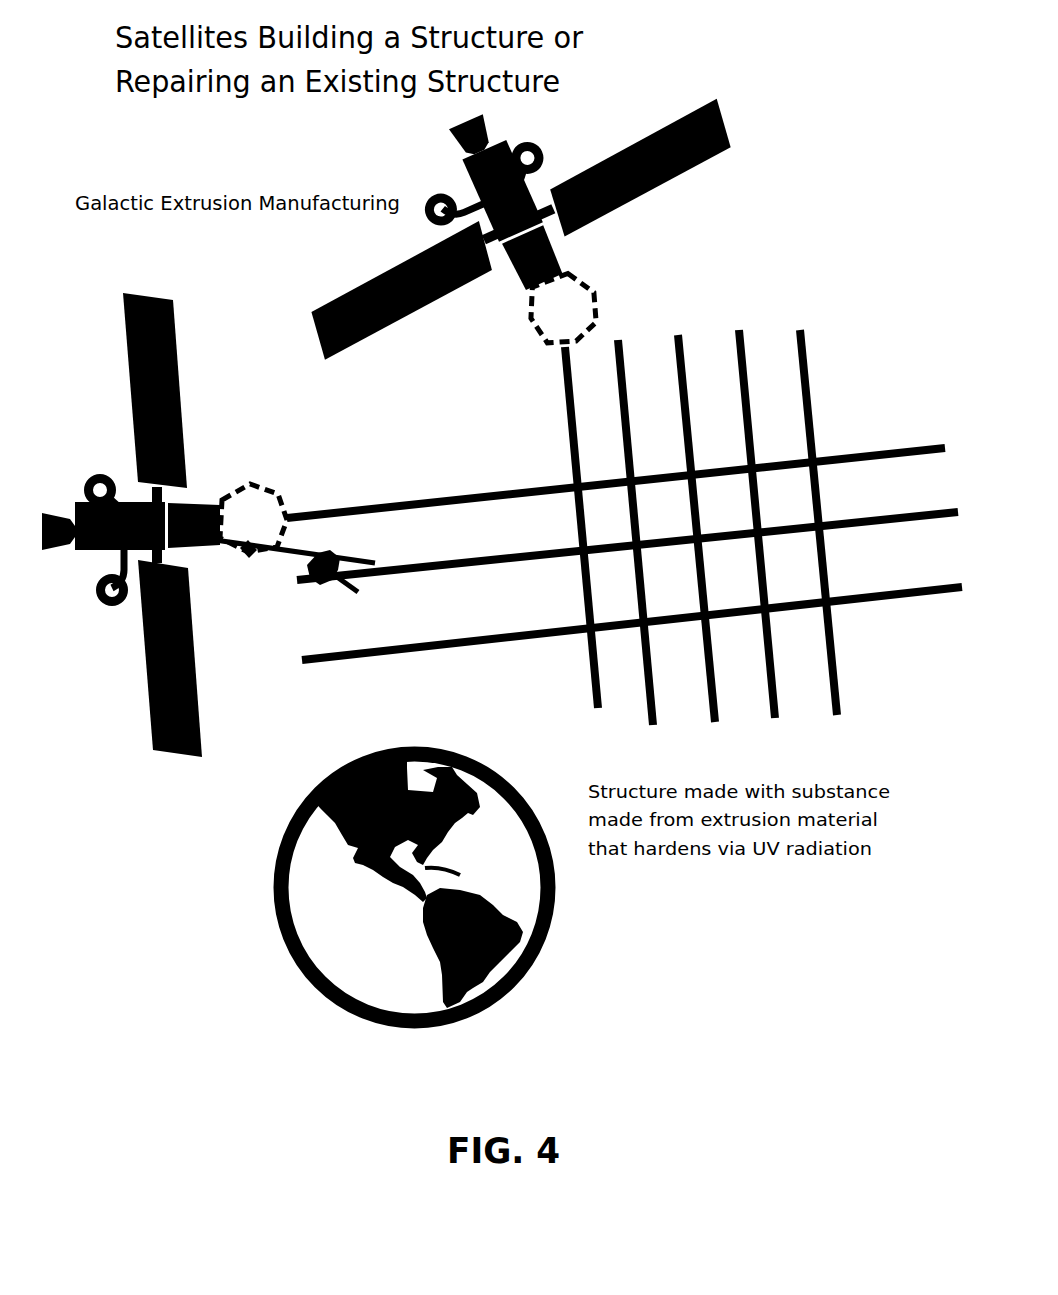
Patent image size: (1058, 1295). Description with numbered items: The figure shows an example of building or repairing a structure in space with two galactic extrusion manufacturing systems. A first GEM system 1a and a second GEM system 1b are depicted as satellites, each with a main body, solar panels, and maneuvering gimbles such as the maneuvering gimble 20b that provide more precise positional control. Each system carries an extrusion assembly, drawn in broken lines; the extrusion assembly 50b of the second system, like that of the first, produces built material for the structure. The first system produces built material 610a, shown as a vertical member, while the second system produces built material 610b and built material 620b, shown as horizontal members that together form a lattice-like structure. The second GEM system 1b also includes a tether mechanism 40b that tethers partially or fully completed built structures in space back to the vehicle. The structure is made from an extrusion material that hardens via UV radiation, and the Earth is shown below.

The GEM system 1a is at (522, 231).
The GEM system 1b is at (208, 525).
The maneuvering gimble 20b is at (97, 593).
The extrusion assembly 50b is at (250, 486).
The tether mechanism 40b is at (307, 568).
The built material 610a is at (572, 460).
The built material 610b is at (409, 505).
The built material 620b is at (411, 566).